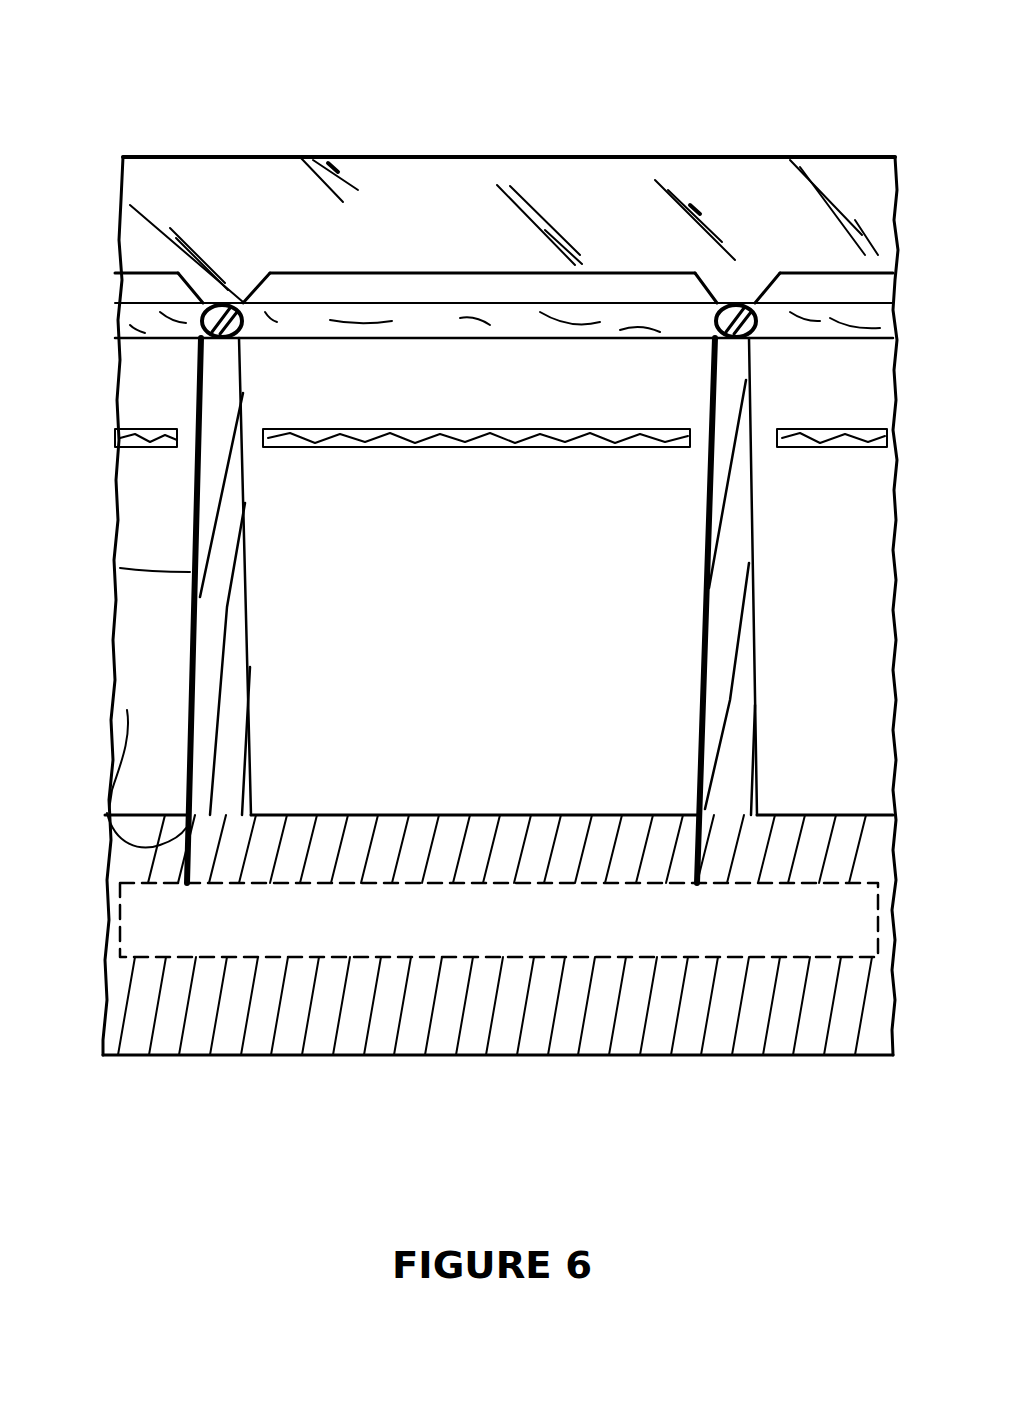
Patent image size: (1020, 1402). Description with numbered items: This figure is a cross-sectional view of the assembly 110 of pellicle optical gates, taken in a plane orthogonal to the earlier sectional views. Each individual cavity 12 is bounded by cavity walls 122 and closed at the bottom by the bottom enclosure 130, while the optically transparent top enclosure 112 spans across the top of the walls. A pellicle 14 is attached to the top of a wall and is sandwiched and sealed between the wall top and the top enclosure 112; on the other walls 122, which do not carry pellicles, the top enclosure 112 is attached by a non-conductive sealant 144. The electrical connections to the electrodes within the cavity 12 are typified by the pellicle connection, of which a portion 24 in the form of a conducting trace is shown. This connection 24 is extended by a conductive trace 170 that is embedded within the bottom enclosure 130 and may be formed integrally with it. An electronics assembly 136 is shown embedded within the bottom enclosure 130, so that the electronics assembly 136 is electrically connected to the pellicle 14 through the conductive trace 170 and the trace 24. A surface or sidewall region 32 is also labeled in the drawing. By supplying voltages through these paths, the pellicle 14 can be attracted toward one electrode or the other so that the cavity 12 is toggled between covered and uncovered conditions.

The assembly 110 is at (170, 114).
The top enclosure 112 is at (833, 158).
The non-conductive sealant 144 is at (525, 341).
The pellicle 14 is at (405, 447).
The cavity 12 is at (565, 512).
The conducting trace 24 is at (695, 526).
The trench sidewall surface 32 is at (690, 680).
The cavity wall 122 is at (762, 665).
The conductive trace 170 is at (690, 850).
The electronics assembly 136 is at (420, 938).
The bottom enclosure 130 is at (738, 1035).